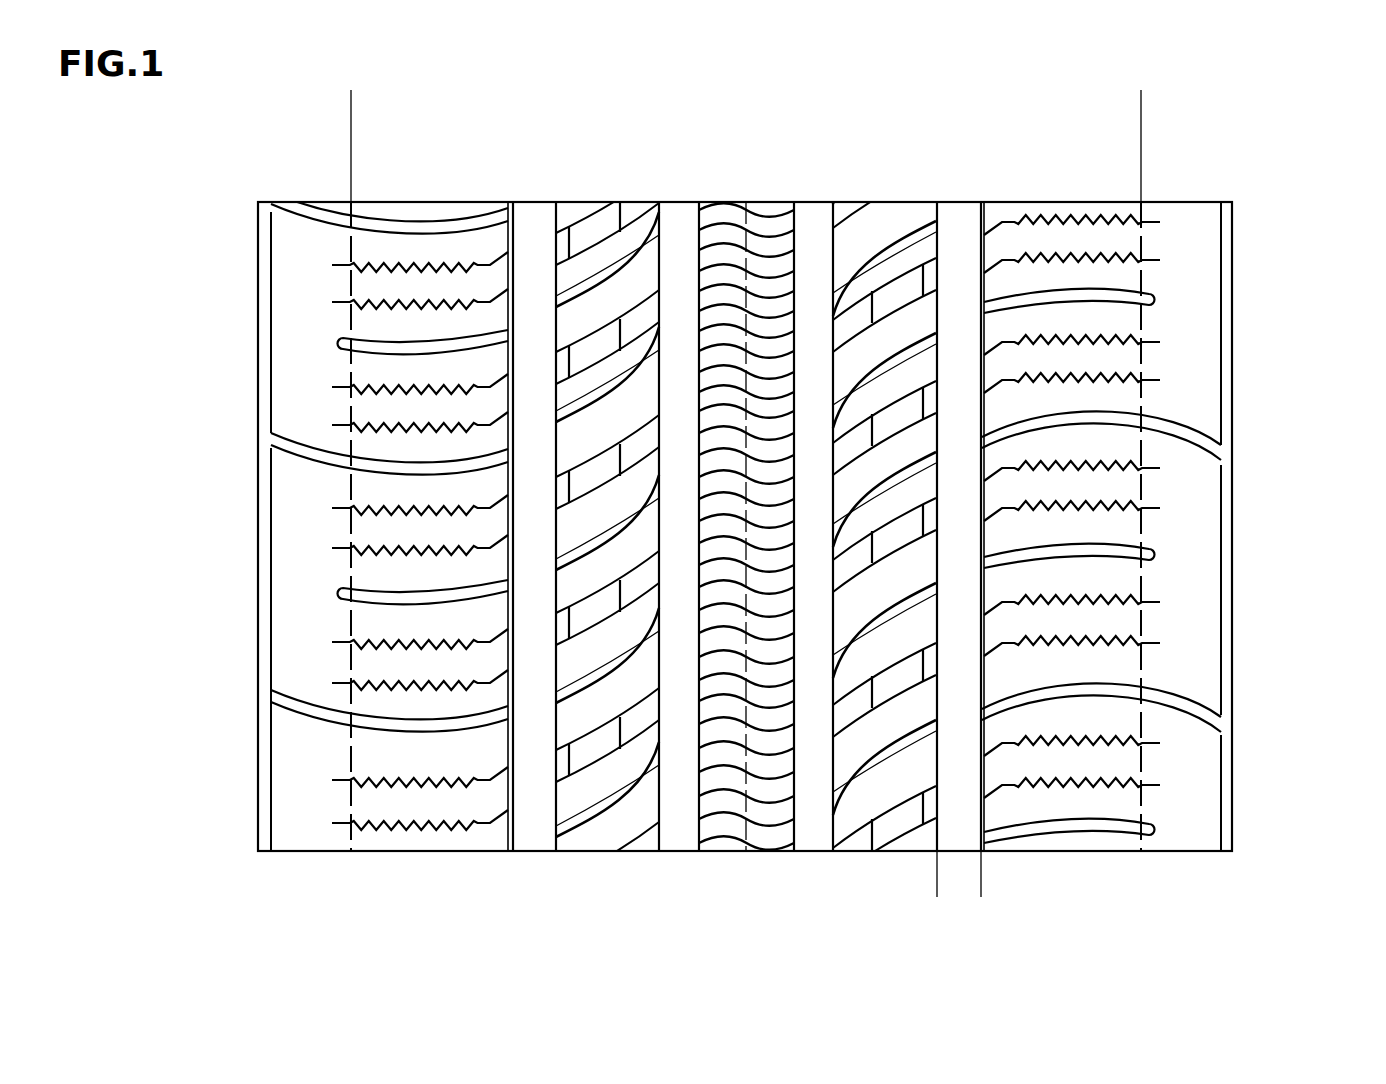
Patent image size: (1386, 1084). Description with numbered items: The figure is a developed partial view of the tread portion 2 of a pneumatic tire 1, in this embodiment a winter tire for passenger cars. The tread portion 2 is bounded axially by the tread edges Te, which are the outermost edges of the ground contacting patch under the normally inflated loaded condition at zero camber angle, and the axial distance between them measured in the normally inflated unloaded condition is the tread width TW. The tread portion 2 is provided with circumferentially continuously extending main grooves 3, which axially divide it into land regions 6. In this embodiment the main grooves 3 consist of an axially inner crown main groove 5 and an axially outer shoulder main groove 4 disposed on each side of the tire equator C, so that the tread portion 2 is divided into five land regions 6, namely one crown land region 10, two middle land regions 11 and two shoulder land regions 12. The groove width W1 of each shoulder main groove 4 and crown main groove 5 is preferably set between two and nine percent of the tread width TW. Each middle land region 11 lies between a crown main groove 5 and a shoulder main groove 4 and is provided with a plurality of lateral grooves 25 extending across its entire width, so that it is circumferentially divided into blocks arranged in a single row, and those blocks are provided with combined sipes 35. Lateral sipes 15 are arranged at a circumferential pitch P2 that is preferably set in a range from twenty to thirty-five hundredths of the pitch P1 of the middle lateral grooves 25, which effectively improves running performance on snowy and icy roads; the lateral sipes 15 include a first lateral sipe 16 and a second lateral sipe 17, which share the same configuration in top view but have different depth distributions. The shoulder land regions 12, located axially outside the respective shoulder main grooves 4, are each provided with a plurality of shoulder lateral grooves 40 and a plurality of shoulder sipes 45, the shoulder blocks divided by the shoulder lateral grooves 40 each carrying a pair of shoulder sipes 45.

The pneumatic tire 1 is at (1052, 185).
The tread portion 2 is at (722, 200).
The main grooves 3 is at (750, 478).
The shoulder main groove 4 is at (530, 262).
The crown main groove 5 is at (745, 499).
The land regions 6 is at (487, 912).
The crown land region 10 is at (725, 820).
The middle land region 11 is at (590, 795).
The shoulder land region 12 is at (480, 835).
The lateral sipes 15 is at (775, 663).
The first lateral sipe 16 is at (765, 728).
The second lateral sipe 17 is at (777, 752).
The lateral grooves 25 is at (510, 323).
The combined sipes 35 is at (583, 462).
The shoulder lateral grooves 40 is at (425, 603).
The shoulder sipes 45 is at (412, 655).
The tread edges Te is at (351, 250).
The tire equator C is at (746, 496).
The tread width TW is at (351, 97).
The pitch of the middle lateral grooves P1 is at (538, 553).
The pitch of the lateral sipes P2 is at (696, 600).
The groove width W1 is at (1020, 887).